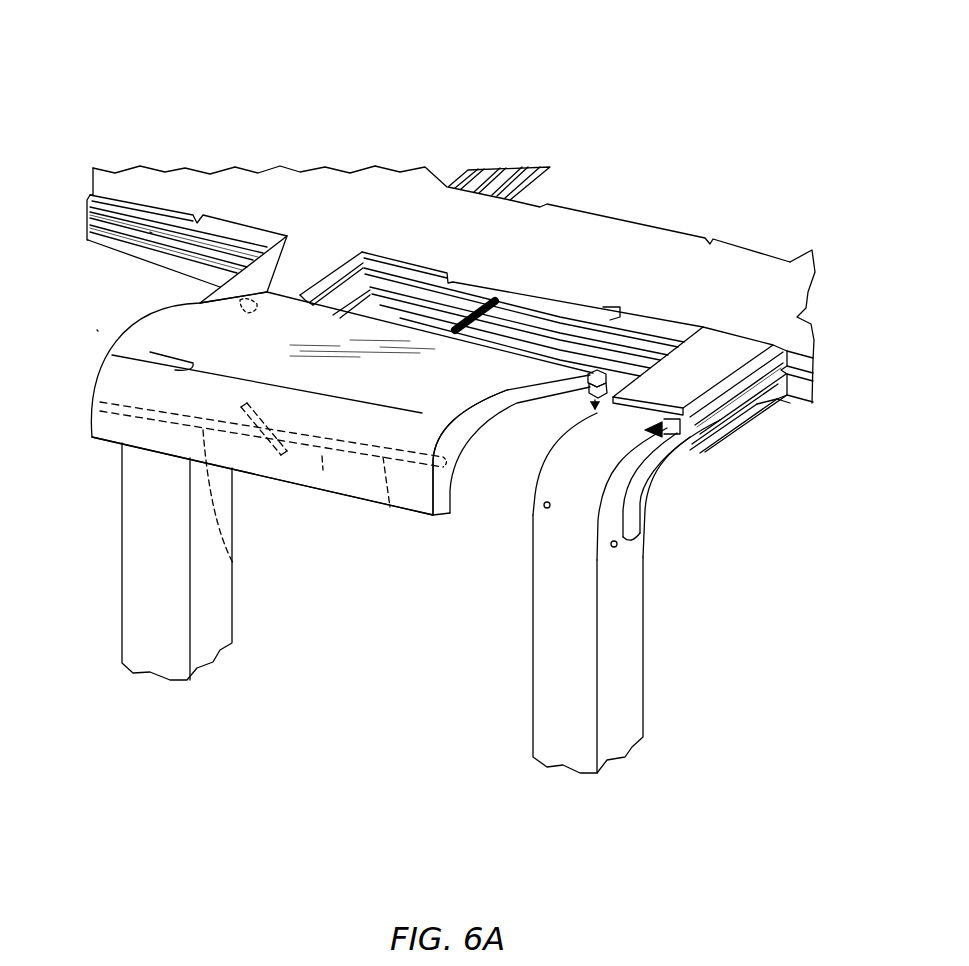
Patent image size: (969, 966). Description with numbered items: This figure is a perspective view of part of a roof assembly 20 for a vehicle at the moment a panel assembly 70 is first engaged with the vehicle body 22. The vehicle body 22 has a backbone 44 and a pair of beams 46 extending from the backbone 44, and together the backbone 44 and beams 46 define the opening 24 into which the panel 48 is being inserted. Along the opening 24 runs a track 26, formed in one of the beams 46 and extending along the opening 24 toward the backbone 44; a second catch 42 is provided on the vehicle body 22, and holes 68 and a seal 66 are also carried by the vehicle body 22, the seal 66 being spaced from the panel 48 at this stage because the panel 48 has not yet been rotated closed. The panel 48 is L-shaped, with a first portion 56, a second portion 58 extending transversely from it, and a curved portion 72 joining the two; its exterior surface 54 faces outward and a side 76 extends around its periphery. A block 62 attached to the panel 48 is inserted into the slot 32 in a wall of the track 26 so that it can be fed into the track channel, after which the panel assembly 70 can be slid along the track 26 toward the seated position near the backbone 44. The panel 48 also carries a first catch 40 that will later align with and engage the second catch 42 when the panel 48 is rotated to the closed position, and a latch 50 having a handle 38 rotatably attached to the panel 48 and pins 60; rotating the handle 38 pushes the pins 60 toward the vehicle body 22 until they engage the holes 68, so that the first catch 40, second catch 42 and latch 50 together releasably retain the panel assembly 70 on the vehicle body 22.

The roof assembly 20 is at (165, 86).
The vehicle body 22 is at (838, 251).
The opening 24 is at (533, 647).
The track 26 is at (322, 274).
The slot 32 is at (682, 443).
The handle 38 is at (276, 460).
The first catch 40 is at (407, 333).
The second catch 42 is at (153, 168).
The backbone 44 is at (797, 317).
The beam 46 is at (121, 553).
The panel 48 is at (100, 368).
The latch 50 is at (323, 458).
The exterior surface 54 is at (160, 443).
The first portion 56 is at (287, 323).
The second portion 58 is at (133, 423).
The pin 60 is at (233, 563).
The block 62 is at (240, 317).
The seal 66 is at (150, 233).
The hole 68 is at (542, 502).
The panel assembly 70 is at (95, 328).
The curved portion 72 is at (115, 354).
The side 76 is at (440, 485).